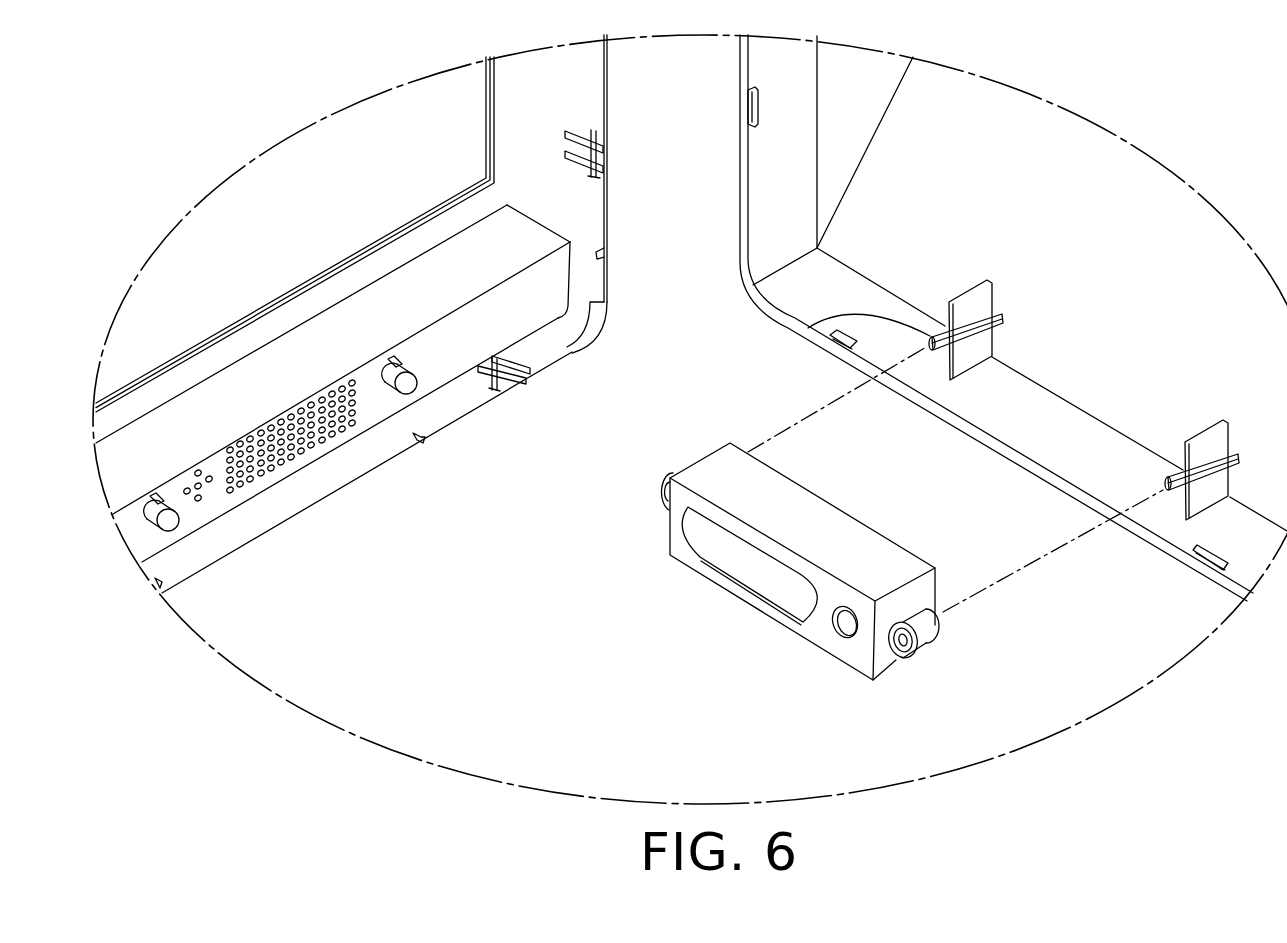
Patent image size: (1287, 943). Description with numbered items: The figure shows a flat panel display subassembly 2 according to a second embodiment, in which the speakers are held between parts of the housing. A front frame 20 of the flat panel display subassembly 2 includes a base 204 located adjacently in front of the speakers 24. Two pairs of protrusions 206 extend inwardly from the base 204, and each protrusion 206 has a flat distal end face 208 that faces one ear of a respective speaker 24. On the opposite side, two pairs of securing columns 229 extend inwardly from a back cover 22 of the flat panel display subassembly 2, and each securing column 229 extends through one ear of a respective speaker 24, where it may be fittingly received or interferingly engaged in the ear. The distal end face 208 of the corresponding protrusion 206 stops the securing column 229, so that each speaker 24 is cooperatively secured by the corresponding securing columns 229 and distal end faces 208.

The flat panel display subassembly 2 is at (318, 59).
The front frame 20 is at (622, 67).
The back cover 22 is at (730, 123).
The speaker 24 is at (787, 587).
The base 204 is at (500, 318).
The protrusion 206 is at (387, 398).
The distal end face 208 is at (412, 385).
The securing column 229 is at (810, 328).